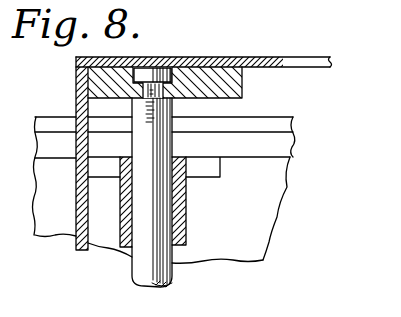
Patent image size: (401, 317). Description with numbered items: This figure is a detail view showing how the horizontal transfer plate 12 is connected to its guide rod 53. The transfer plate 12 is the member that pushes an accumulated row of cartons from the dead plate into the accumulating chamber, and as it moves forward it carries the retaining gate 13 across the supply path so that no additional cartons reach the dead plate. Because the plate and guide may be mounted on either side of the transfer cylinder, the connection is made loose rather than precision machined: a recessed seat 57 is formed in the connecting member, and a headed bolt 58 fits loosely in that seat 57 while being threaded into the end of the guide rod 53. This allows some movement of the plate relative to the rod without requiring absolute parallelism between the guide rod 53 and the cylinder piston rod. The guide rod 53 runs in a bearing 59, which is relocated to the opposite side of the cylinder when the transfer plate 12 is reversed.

The transfer plate 12 is at (309, 58).
The retaining gate 13 is at (80, 224).
The guide rod 53 is at (173, 266).
The recessed seat 57 is at (171, 84).
The headed bolt 58 is at (161, 66).
The bearing 59 is at (187, 210).